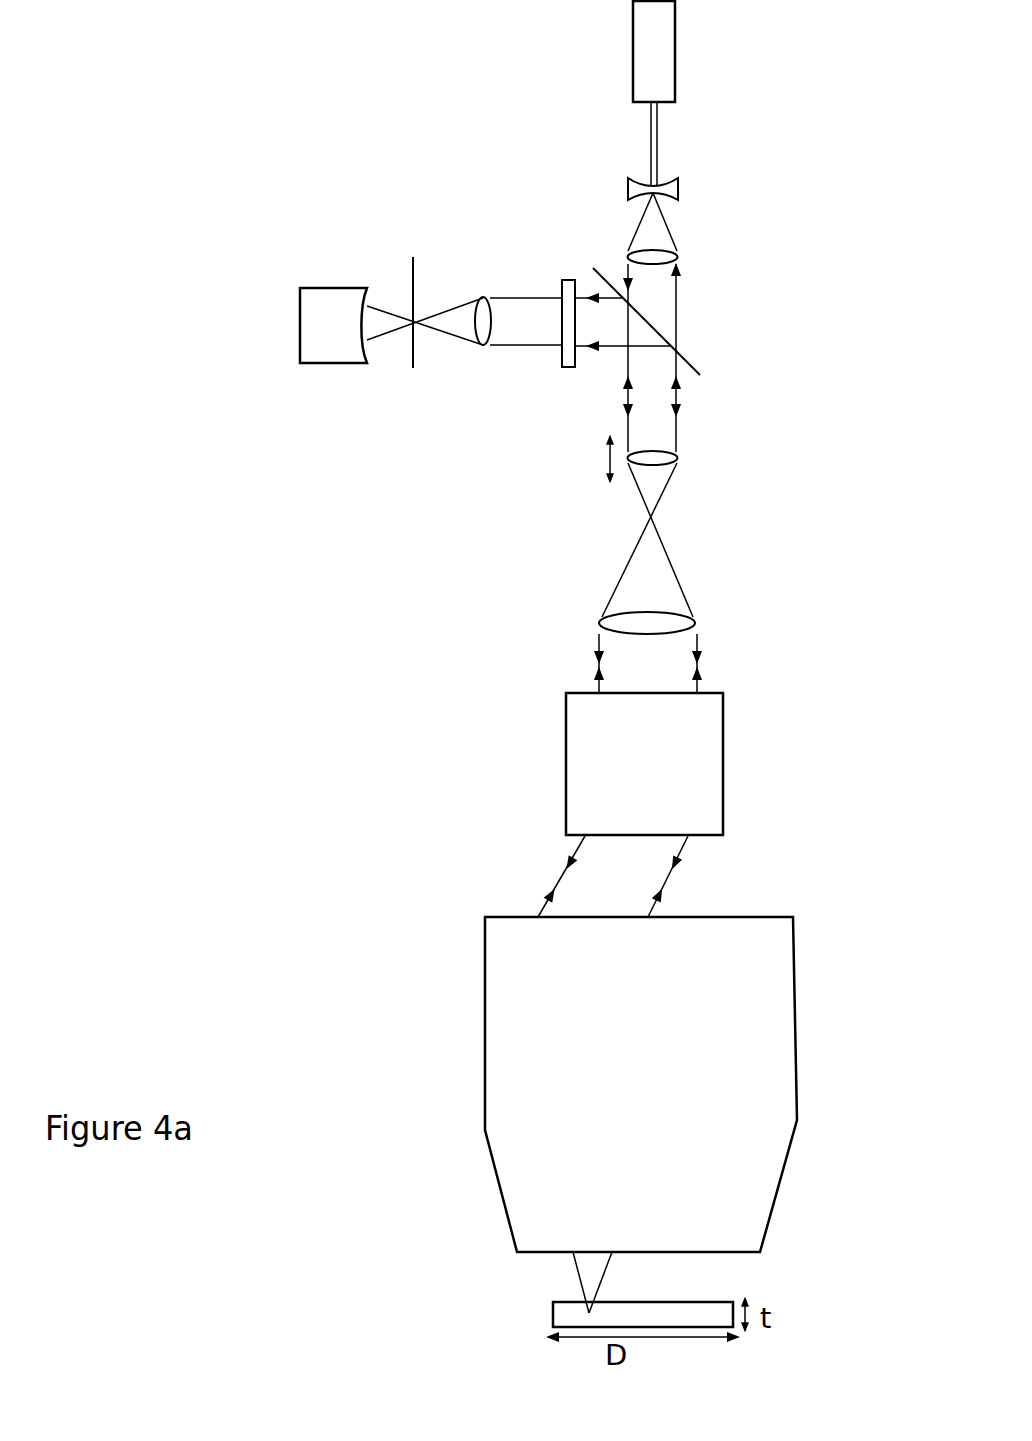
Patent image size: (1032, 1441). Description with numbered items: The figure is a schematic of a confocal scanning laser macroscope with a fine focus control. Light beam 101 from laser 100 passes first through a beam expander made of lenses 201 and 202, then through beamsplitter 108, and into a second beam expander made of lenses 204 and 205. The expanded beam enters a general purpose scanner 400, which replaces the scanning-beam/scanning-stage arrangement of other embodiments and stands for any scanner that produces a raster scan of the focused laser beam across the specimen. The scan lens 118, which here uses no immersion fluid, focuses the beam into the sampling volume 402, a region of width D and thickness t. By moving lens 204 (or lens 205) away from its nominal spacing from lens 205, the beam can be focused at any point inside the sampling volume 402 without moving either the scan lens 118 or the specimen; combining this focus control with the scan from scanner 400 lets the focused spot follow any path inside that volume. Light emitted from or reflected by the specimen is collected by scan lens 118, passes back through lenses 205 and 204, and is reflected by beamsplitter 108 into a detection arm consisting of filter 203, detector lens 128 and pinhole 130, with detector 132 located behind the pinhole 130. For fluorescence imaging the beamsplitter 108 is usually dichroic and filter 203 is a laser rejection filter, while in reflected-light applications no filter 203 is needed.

The laser 100 is at (675, 40).
The light beam 101 is at (657, 135).
The lens 201 is at (678, 189).
The lens 202 is at (677, 257).
The beamsplitter 108 is at (685, 357).
The filter 203 is at (569, 367).
The detector lens 128 is at (483, 297).
The pinhole 130 is at (413, 257).
The detector 132 is at (332, 288).
The lens 204 is at (677, 458).
The lens 205 is at (695, 623).
The general purpose scanner 400 is at (723, 750).
The scan lens 118 is at (795, 1045).
The sampling volume 402 is at (725, 1302).